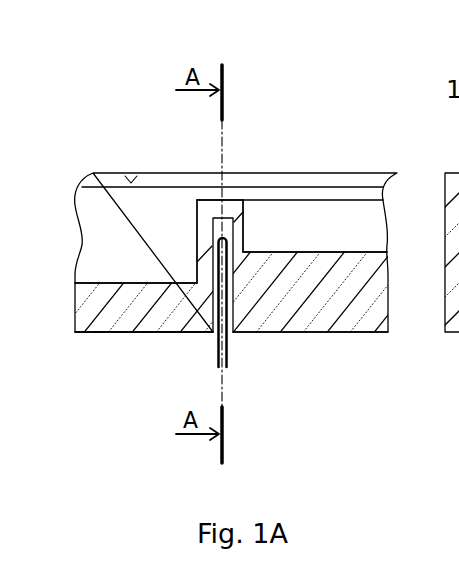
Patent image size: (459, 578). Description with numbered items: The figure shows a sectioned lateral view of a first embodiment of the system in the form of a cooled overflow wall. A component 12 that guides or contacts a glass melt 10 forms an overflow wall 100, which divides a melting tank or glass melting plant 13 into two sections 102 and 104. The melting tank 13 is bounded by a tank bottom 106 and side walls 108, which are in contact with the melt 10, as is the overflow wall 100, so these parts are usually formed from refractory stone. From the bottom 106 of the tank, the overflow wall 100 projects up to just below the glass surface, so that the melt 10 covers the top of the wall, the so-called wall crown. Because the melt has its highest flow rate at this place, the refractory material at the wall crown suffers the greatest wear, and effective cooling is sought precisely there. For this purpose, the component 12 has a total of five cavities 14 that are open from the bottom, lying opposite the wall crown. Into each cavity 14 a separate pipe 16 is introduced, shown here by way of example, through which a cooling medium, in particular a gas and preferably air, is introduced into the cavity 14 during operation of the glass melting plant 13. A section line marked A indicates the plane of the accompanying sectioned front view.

The glass melting plant 13 is at (68, 118).
The side walls 108 is at (190, 185).
The glass melt 10 is at (121, 230).
The component 12 is at (263, 130).
The overflow wall 100 is at (231, 206).
The section 104 is at (312, 212).
The section 102 is at (107, 258).
The tank bottom 106 is at (135, 313).
The pipe 16 is at (228, 352).
The cavity 14 is at (219, 347).